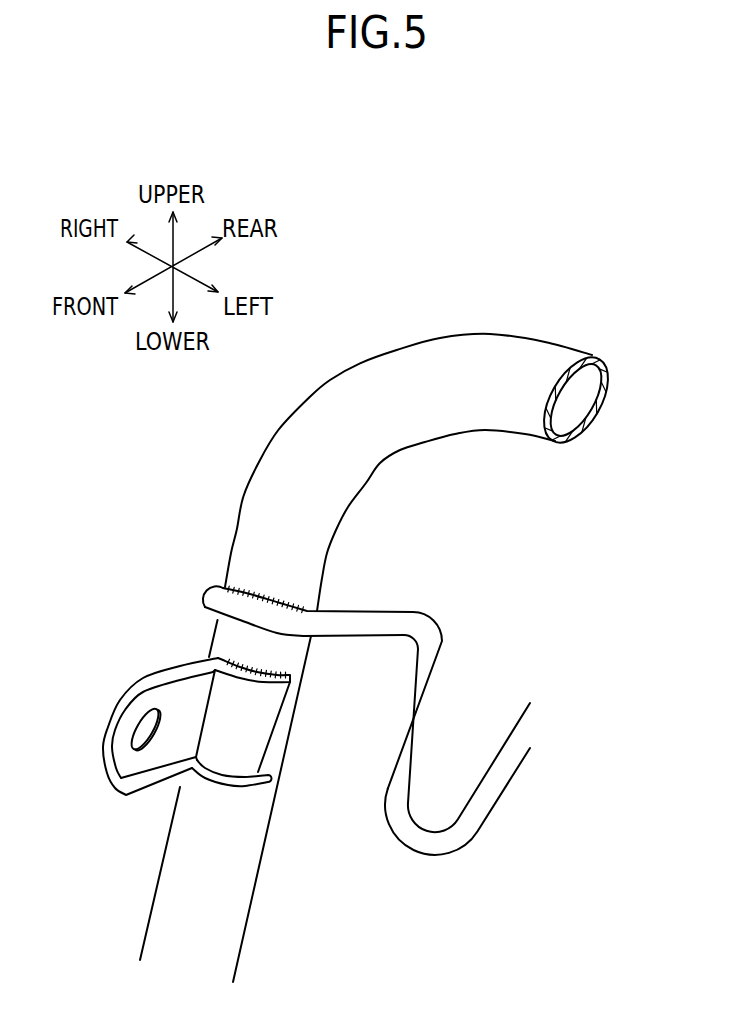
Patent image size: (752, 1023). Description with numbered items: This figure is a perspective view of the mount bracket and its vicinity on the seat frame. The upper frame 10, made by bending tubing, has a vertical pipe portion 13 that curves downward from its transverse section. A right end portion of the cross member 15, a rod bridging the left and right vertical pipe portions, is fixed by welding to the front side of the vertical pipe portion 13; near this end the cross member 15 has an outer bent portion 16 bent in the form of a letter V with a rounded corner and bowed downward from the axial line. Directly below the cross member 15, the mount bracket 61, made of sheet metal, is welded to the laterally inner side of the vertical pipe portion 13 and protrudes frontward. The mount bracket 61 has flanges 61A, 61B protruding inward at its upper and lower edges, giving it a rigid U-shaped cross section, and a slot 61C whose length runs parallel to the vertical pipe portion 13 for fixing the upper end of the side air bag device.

The upper frame 10 is at (450, 325).
The vertical pipe portion 13 is at (172, 887).
The cross member 15 is at (435, 610).
The outer bent portion 16 is at (422, 843).
The mount bracket 61 is at (161, 723).
The flange 61A is at (187, 670).
The flange 61B is at (152, 788).
The slot 61C is at (135, 740).